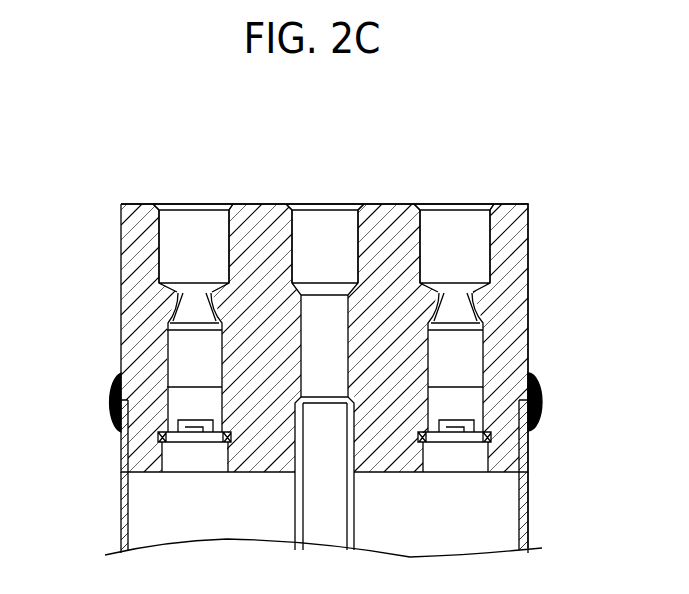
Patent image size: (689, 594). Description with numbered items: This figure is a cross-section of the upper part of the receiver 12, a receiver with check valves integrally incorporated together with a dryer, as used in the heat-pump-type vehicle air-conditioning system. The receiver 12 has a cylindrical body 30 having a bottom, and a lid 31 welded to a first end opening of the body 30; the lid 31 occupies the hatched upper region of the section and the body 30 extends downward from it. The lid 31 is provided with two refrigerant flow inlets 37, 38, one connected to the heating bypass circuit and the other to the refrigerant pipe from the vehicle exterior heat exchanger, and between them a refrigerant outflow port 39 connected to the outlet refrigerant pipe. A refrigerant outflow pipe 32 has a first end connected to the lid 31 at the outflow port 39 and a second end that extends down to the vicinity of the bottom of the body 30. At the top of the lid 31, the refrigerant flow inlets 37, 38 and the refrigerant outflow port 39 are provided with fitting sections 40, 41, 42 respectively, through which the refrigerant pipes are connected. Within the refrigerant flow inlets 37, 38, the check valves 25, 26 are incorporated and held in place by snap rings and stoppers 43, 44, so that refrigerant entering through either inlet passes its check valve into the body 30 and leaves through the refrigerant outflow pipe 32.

The receiver 12 is at (93, 447).
The check valve 25 is at (175, 349).
The check valve 26 is at (470, 340).
The body 30 is at (530, 510).
The lid 31 is at (132, 268).
The refrigerant outflow pipe 32 is at (325, 521).
The refrigerant flow inlet 37 is at (203, 225).
The refrigerant flow inlet 38 is at (453, 220).
The refrigerant outflow port 39 is at (334, 218).
The fitting section 40 is at (163, 205).
The fitting section 41 is at (483, 205).
The fitting section 42 is at (293, 218).
The stopper 43 is at (192, 445).
The stopper 44 is at (458, 445).